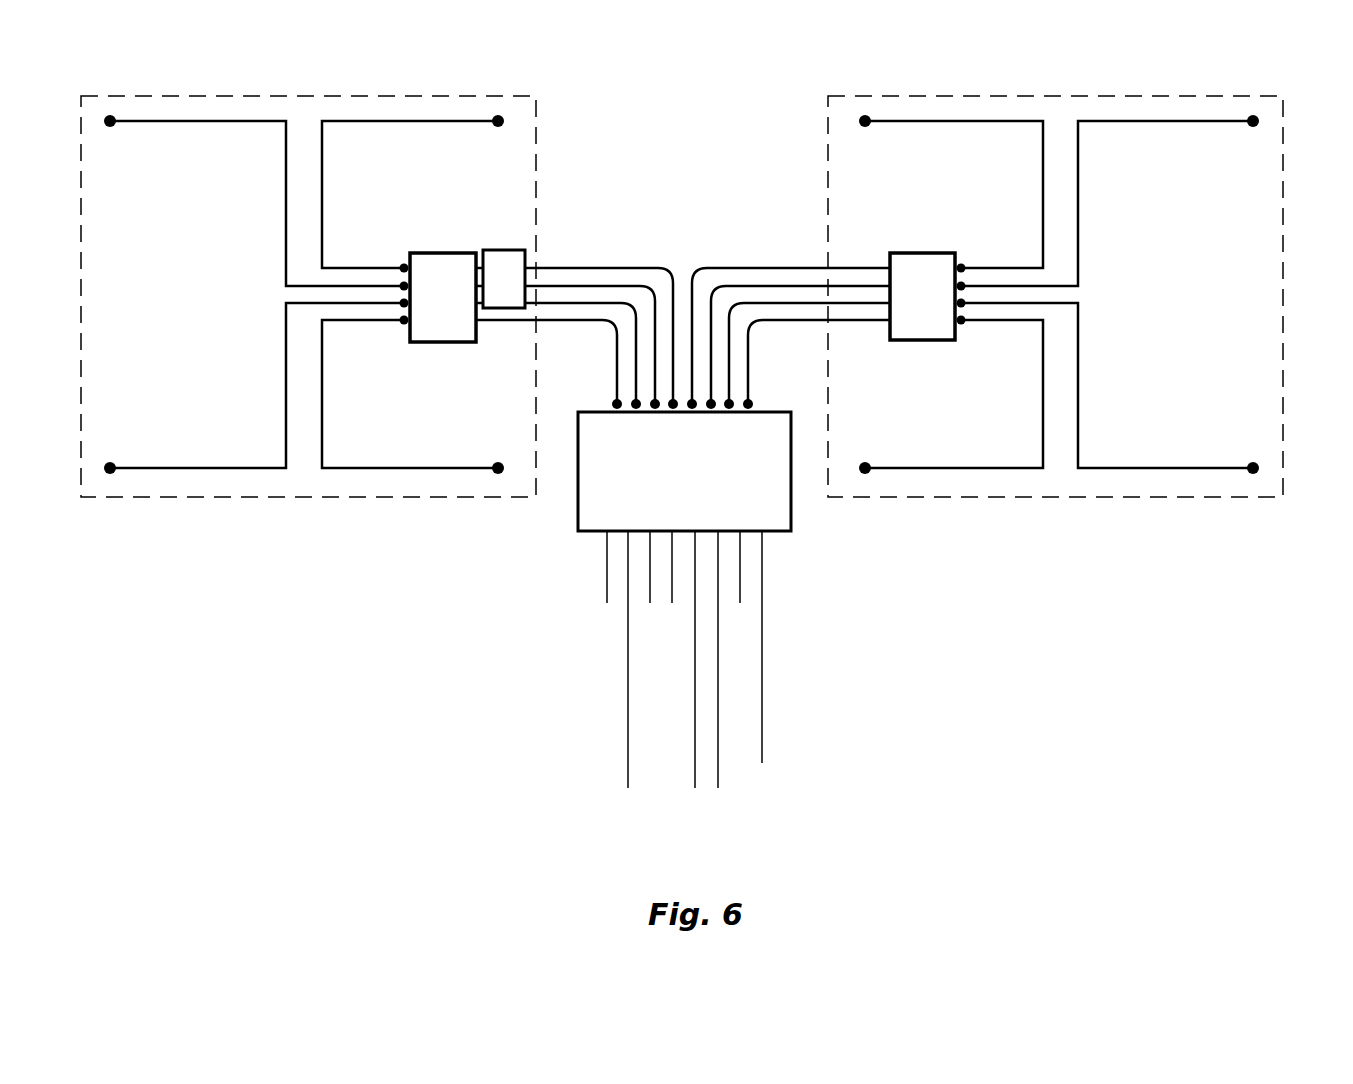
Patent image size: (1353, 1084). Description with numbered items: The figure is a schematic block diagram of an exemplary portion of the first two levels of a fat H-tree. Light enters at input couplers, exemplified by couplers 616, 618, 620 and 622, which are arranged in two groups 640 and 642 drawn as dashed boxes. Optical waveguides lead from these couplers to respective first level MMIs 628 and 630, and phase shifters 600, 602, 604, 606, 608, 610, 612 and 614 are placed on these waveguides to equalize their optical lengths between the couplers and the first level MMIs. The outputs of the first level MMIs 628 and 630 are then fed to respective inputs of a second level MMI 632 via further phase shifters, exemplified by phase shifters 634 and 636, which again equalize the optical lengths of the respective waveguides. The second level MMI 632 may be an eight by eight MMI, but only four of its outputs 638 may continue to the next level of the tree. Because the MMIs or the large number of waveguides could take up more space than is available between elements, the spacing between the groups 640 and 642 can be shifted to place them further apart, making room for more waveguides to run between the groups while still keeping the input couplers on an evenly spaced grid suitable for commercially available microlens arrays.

The phase shifter 600 is at (408, 252).
The phase shifter 602 is at (402, 285).
The phase shifter 604 is at (402, 304).
The phase shifter 606 is at (408, 325).
The phase shifter 608 is at (963, 284).
The phase shifter 610 is at (965, 267).
The phase shifter 612 is at (965, 305).
The phase shifter 614 is at (963, 327).
The coupler 616 is at (110, 121).
The coupler 618 is at (498, 121).
The coupler 620 is at (865, 121).
The coupler 622 is at (1253, 121).
The first level MMI 628 is at (515, 250).
The first level MMI 630 is at (918, 252).
The second level MMI 632 is at (791, 518).
The phase shifter 634 is at (615, 401).
The phase shifter 636 is at (749, 401).
The outputs 638 is at (782, 597).
The group 640 is at (293, 497).
The group 642 is at (1018, 497).